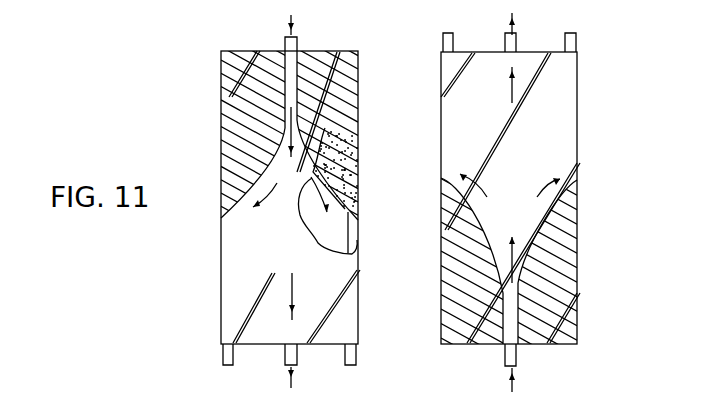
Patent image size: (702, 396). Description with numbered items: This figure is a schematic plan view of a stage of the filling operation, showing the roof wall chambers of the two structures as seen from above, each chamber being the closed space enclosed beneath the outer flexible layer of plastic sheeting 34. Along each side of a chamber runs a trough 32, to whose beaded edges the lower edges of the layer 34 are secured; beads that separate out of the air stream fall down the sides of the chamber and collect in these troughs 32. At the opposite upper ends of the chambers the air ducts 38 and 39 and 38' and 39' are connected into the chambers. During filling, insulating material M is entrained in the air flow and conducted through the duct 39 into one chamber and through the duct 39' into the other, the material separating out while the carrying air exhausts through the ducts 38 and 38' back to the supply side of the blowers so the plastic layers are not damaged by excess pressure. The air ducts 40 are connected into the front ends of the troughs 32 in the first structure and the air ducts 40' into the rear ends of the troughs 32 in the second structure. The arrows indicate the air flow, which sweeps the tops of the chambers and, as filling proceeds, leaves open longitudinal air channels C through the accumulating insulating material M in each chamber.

The outer flexible layer of plastic sheeting 34 is at (282, 272).
The longitudinal air channel C is at (292, 79).
The insulating material M is at (345, 174).
The trough 32 is at (356, 244).
The air duct 38 is at (310, 194).
The air duct 38' is at (503, 32).
The air duct 39 is at (539, 368).
The air duct 39' is at (264, 33).
The air duct 40 is at (282, 359).
The air duct 40' is at (520, 41).